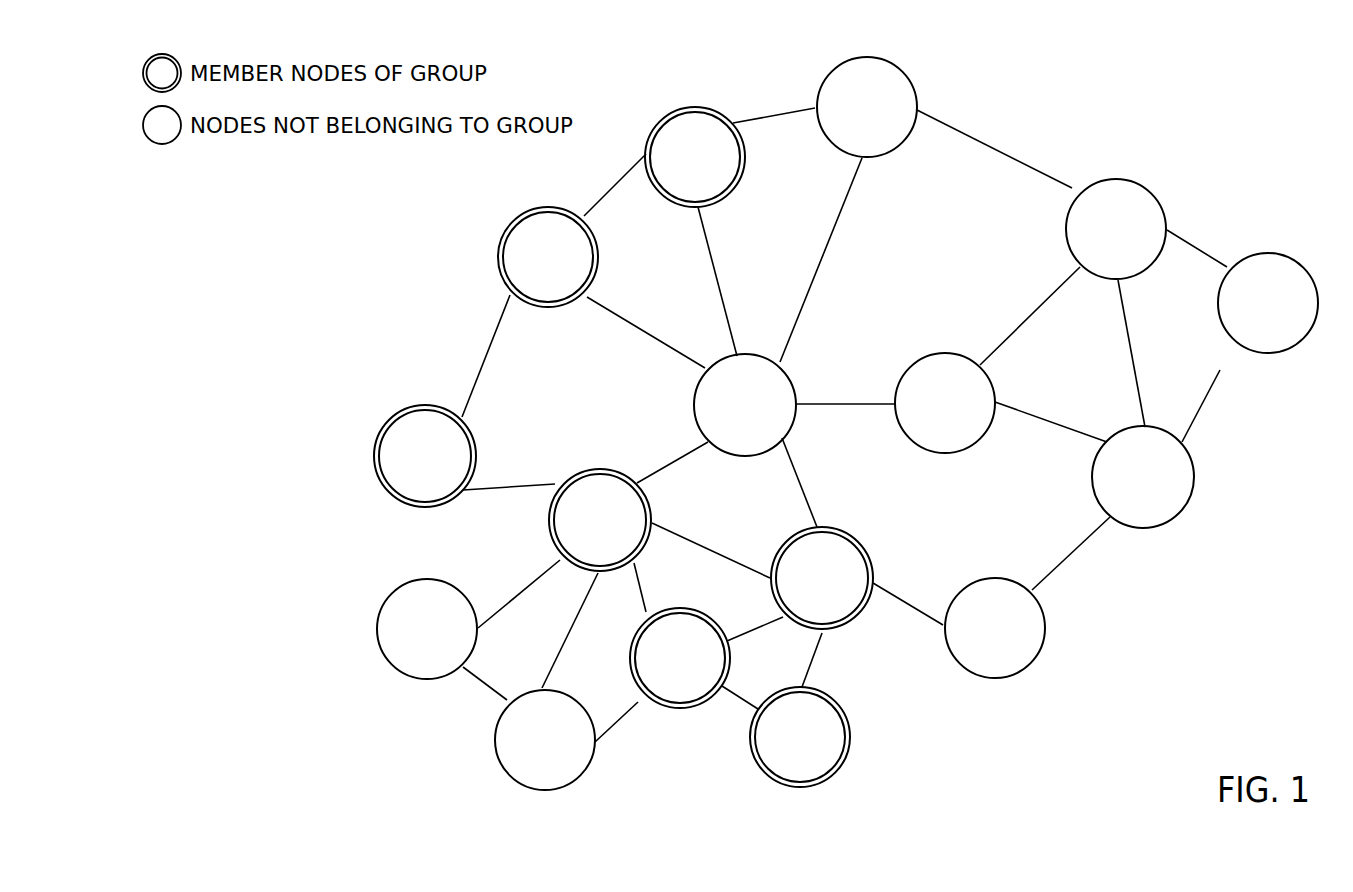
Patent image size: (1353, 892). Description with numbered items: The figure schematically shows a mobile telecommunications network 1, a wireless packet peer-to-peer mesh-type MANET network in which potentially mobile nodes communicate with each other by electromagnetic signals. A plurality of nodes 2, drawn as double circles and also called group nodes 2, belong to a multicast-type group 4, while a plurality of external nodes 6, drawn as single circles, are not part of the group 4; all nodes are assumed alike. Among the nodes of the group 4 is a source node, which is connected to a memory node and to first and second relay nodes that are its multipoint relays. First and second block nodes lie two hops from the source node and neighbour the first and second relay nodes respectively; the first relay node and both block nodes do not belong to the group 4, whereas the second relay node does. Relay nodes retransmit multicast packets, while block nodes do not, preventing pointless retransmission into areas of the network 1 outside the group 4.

The mobile telecommunications network 1 is at (1162, 107).
The node 2 is at (516, 241).
The group 4 is at (432, 333).
The external node 6 is at (893, 90).